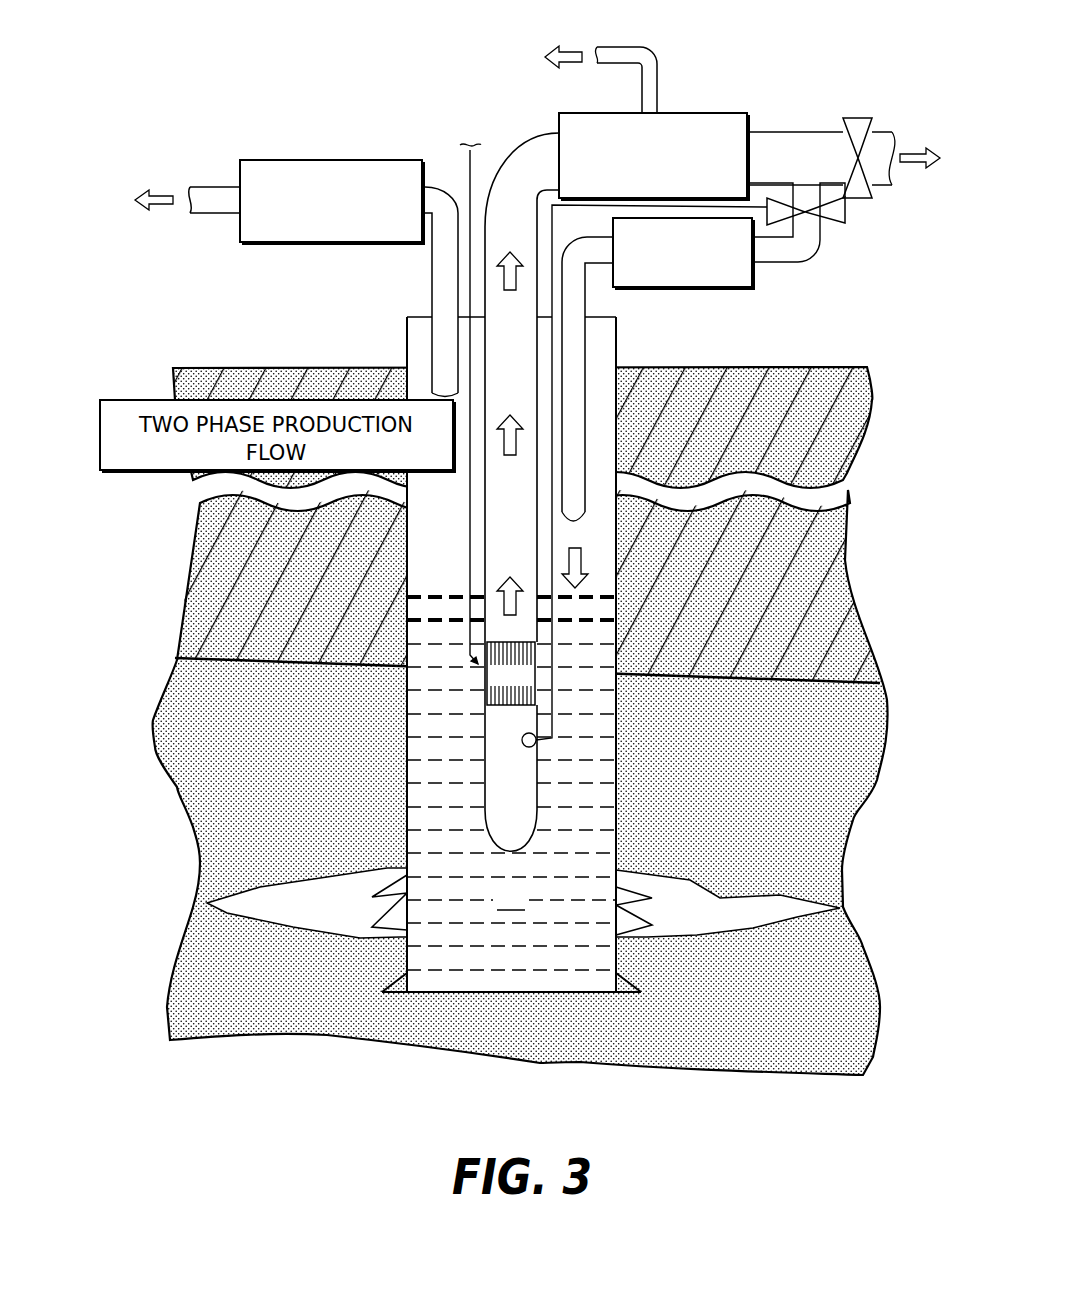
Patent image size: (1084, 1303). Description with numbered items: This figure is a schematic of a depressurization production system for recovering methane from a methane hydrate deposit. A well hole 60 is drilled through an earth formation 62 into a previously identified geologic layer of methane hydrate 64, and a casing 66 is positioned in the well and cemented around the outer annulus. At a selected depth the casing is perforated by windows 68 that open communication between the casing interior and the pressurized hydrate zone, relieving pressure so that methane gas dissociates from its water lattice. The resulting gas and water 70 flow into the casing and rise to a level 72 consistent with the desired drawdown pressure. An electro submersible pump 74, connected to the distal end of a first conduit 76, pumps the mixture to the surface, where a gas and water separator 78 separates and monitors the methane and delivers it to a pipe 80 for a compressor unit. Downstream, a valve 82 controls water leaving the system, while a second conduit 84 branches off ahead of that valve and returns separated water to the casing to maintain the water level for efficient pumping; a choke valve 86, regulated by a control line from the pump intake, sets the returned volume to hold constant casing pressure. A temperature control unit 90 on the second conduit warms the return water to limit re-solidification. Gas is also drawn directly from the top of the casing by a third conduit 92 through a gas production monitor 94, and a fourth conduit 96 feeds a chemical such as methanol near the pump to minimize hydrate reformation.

The well hole 60 is at (430, 995).
The earth formation 62 is at (845, 560).
The geologic layer of methane hydrate 64 is at (190, 827).
The casing 66 is at (616, 813).
The windows 68 is at (387, 870).
The gas and water 70 is at (511, 807).
The level 72 is at (442, 596).
The electro submersible pump 74 is at (485, 707).
The first conduit 76 is at (537, 140).
The gas and water separator 78 is at (717, 112).
The pipe 80 is at (657, 52).
The valve 82 is at (865, 118).
The second conduit 84 is at (798, 262).
The choke valve 86 is at (847, 222).
The temperature control unit 90 is at (676, 288).
The third conduit 92 is at (432, 282).
The gas production monitor 94 is at (290, 159).
The fourth conduit 96 is at (470, 160).